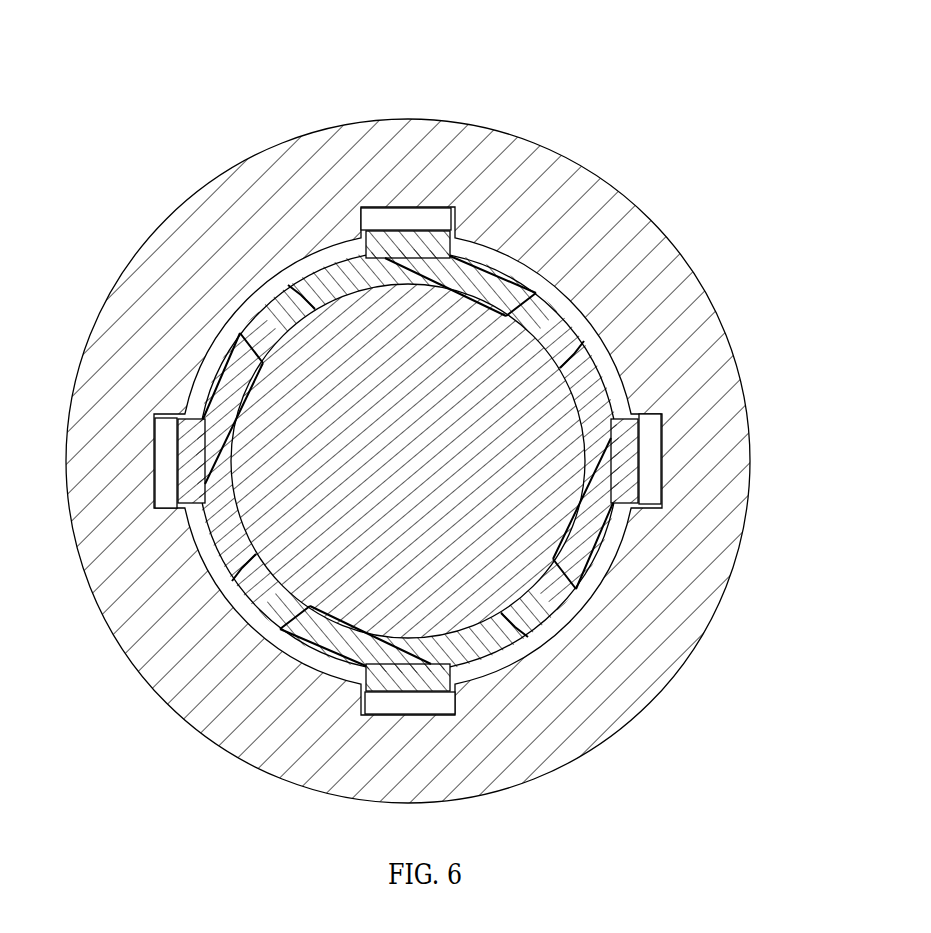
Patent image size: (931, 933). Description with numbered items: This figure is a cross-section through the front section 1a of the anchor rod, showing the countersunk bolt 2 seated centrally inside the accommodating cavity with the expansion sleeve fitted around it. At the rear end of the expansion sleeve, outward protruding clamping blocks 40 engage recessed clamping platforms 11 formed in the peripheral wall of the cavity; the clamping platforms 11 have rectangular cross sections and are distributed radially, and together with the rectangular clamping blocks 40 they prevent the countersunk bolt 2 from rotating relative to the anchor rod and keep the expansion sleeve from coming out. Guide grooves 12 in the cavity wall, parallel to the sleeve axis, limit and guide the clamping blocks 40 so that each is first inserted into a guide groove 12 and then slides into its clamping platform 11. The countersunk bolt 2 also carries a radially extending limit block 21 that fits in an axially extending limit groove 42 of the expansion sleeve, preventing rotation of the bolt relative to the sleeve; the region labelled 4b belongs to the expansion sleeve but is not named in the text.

The front section 1a is at (562, 172).
The countersunk bolt 2 is at (568, 388).
The limit block 21 is at (592, 280).
The limit groove 42 is at (598, 335).
The wedge 4b is at (303, 280).
The clamping platform 11 is at (394, 216).
The guide groove 12 is at (376, 131).
The clamping block 40 is at (370, 232).